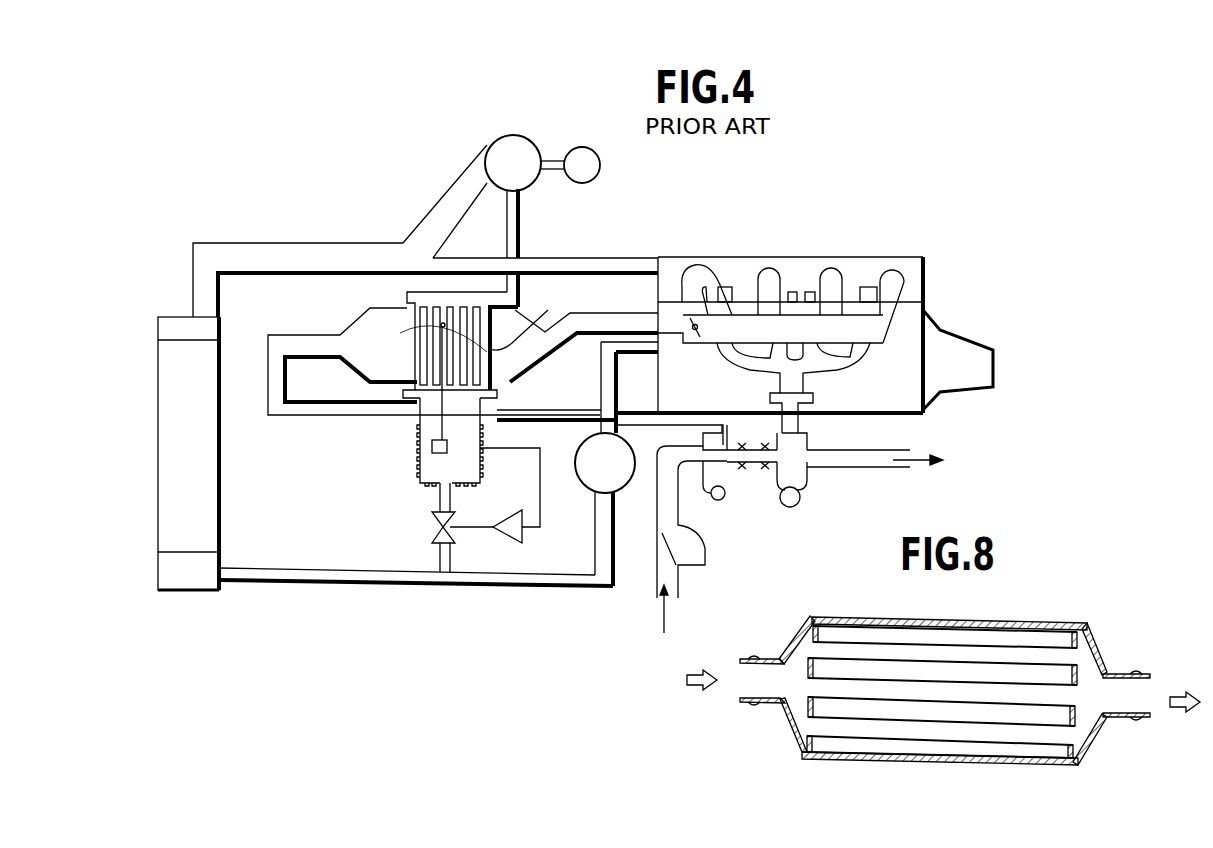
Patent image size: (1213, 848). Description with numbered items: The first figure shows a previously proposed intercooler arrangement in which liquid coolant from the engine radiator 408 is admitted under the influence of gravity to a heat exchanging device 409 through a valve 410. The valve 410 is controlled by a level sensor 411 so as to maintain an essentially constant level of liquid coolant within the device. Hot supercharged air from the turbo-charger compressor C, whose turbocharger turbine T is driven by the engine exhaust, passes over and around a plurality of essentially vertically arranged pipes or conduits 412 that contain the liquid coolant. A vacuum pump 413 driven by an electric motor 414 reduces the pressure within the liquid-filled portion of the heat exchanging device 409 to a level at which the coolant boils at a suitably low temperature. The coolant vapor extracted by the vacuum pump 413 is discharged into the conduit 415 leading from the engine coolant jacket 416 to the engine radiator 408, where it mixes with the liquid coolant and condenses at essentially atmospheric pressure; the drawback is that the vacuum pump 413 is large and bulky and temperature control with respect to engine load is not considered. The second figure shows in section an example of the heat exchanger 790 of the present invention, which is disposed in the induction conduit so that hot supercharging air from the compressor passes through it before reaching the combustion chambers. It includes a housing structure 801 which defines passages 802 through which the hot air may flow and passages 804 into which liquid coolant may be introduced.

In FIG. 4, the engine radiator 408 is at (220, 489).
In FIG. 4, the heat exchanging device 409 is at (427, 442).
In FIG. 4, the valve 410 is at (432, 530).
In FIG. 4, the level sensor 411 is at (441, 325).
In FIG. 4, the pipes or conduits 412 is at (538, 318).
In FIG. 4, the vacuum pump 413 is at (487, 145).
In FIG. 4, the electric motor 414 is at (594, 183).
In FIG. 4, the conduit 415 is at (312, 243).
In FIG. 4, the engine coolant jacket 416 is at (735, 257).
In FIG. 4, the turbo-charger compressor C is at (721, 499).
In FIG. 4, the turbine T is at (798, 507).
In FIG. 8, the heat exchanger 790 is at (794, 761).
In FIG. 8, the housing structure 801 is at (1058, 766).
In FIG. 8, the passages 802 is at (1066, 736).
In FIG. 8, the passages 804 is at (880, 674).